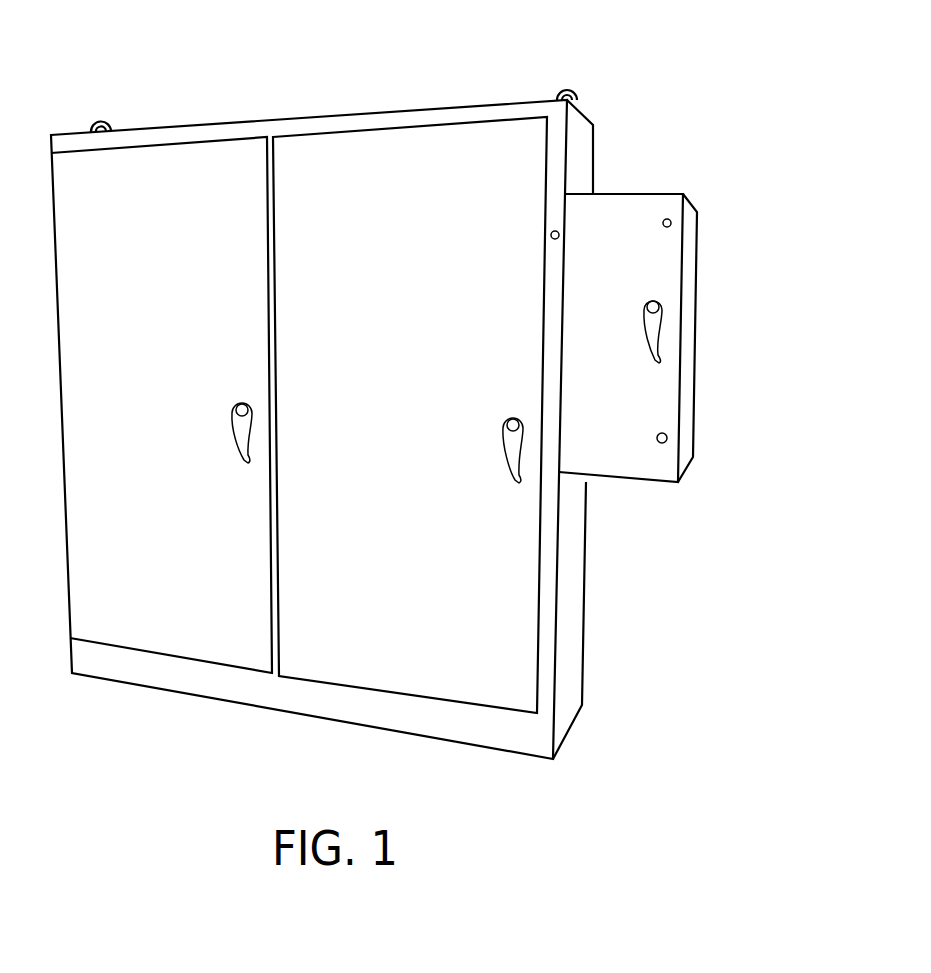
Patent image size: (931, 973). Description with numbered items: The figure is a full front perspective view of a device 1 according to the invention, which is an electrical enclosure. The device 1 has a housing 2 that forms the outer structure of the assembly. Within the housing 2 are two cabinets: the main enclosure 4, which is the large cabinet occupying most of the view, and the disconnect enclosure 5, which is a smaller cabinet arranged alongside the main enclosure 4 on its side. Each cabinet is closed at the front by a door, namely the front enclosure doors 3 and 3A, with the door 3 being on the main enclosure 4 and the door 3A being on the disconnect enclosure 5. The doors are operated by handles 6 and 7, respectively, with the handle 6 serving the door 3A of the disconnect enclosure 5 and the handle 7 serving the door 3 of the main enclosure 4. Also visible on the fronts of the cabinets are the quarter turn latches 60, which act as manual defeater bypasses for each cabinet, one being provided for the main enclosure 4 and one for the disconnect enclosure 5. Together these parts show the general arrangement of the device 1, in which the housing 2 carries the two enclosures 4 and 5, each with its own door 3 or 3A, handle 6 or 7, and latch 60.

The device 1 is at (640, 123).
The housing 2 is at (582, 158).
The front enclosure door 3 is at (368, 353).
The front enclosure door 3A is at (598, 261).
The main enclosure 4 is at (603, 600).
The disconnect enclosure 5 is at (687, 338).
The handle 6 is at (661, 300).
The handle 7 is at (510, 447).
The quarter turn latch 60 is at (551, 236).